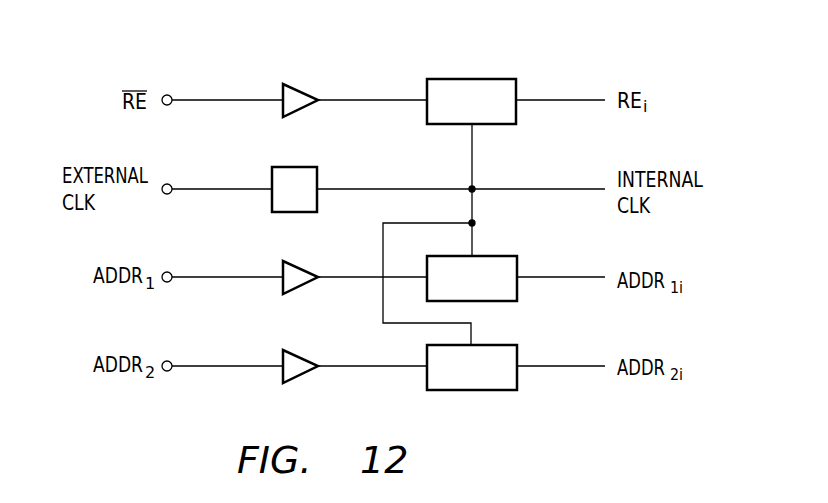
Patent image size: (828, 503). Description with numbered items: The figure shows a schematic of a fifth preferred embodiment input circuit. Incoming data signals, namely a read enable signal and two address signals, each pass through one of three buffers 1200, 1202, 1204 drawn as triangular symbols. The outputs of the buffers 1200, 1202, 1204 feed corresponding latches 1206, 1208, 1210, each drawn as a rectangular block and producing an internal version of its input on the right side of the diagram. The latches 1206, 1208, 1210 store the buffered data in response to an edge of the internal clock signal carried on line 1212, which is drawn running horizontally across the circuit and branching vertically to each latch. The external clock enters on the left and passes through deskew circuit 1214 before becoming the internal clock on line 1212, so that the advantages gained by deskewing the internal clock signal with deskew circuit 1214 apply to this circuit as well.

The buffer 1200 is at (296, 84).
The buffer 1202 is at (284, 290).
The buffer 1204 is at (284, 380).
The latch 1206 is at (474, 79).
The latch 1208 is at (517, 290).
The latch 1210 is at (472, 390).
The line 1212 is at (583, 188).
The deskew circuit 1214 is at (272, 178).